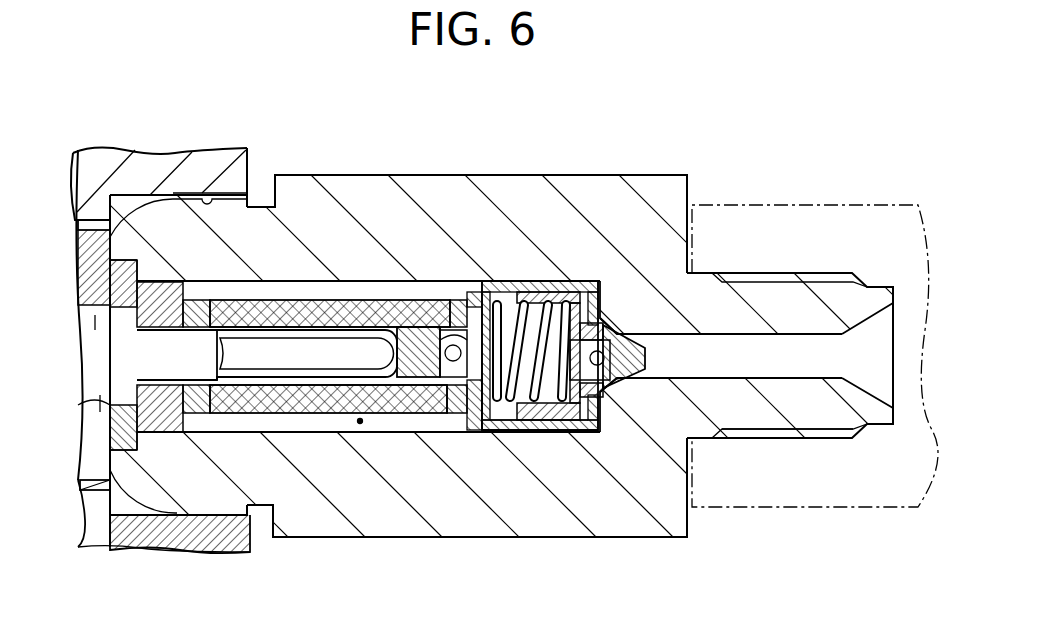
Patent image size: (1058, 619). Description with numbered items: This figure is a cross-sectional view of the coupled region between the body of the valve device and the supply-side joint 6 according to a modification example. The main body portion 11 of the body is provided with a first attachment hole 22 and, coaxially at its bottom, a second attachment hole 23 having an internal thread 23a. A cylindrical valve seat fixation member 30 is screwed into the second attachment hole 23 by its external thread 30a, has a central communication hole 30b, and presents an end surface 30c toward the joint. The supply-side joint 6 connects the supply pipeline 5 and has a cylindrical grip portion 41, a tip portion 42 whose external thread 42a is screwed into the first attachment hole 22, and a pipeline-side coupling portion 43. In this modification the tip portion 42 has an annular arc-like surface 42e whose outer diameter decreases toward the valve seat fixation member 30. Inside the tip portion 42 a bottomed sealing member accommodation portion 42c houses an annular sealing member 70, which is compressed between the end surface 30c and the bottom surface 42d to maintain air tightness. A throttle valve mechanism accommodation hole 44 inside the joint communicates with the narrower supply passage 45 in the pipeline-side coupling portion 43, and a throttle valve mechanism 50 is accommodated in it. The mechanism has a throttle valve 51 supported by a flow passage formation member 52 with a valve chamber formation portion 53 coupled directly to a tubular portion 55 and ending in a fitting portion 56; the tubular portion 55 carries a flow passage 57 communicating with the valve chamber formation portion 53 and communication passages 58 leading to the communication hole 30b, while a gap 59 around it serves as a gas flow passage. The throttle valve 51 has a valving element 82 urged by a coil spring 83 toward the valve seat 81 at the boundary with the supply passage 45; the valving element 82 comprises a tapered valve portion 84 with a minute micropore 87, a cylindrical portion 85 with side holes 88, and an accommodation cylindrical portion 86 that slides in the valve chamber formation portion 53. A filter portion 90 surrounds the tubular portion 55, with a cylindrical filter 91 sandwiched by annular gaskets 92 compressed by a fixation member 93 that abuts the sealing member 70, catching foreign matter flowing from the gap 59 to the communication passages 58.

The supply pipeline 5 is at (800, 206).
The supply-side joint 6 is at (714, 134).
The main body portion 11 is at (92, 158).
The first attachment hole 22 is at (203, 192).
The second attachment hole 23 is at (78, 225).
The internal thread 23a is at (84, 485).
The valve seat fixation member 30 is at (67, 372).
The external thread 30a is at (90, 497).
The communication hole 30b is at (100, 408).
The end surface 30c is at (85, 318).
The grip portion 41 is at (430, 185).
The tip portion 42 is at (198, 324).
The external thread 42a is at (164, 555).
The sealing member accommodation portion 42c is at (150, 466).
The bottom surface 42d is at (150, 217).
The arc-like surface 42e is at (148, 516).
The pipeline-side coupling portion 43 is at (776, 292).
The throttle valve mechanism accommodation hole 44 is at (400, 434).
The supply passage 45 is at (770, 382).
The throttle valve mechanism 50 is at (584, 360).
The throttle valve 51 is at (549, 286).
The flow passage formation member 52 is at (465, 300).
The valve chamber formation portion 53 is at (540, 432).
The tubular portion 55 is at (320, 382).
The fitting portion 56 is at (140, 420).
The flow passage 57 is at (428, 326).
The communication passages 58 is at (212, 352).
The gap 59 is at (360, 425).
The sealing member 70 is at (108, 420).
The valve seat 81 is at (638, 326).
The valving element 82 is at (612, 324).
The coil spring 83 is at (487, 312).
The valve portion 84 is at (627, 380).
The cylindrical portion 85 is at (571, 430).
The accommodation cylindrical portion 86 is at (540, 424).
The micropore 87 is at (645, 356).
The side holes 88 is at (588, 300).
The filter portion 90 is at (288, 334).
The filter 91 is at (283, 298).
The gaskets 92 is at (197, 298).
The fixation member 93 is at (163, 292).